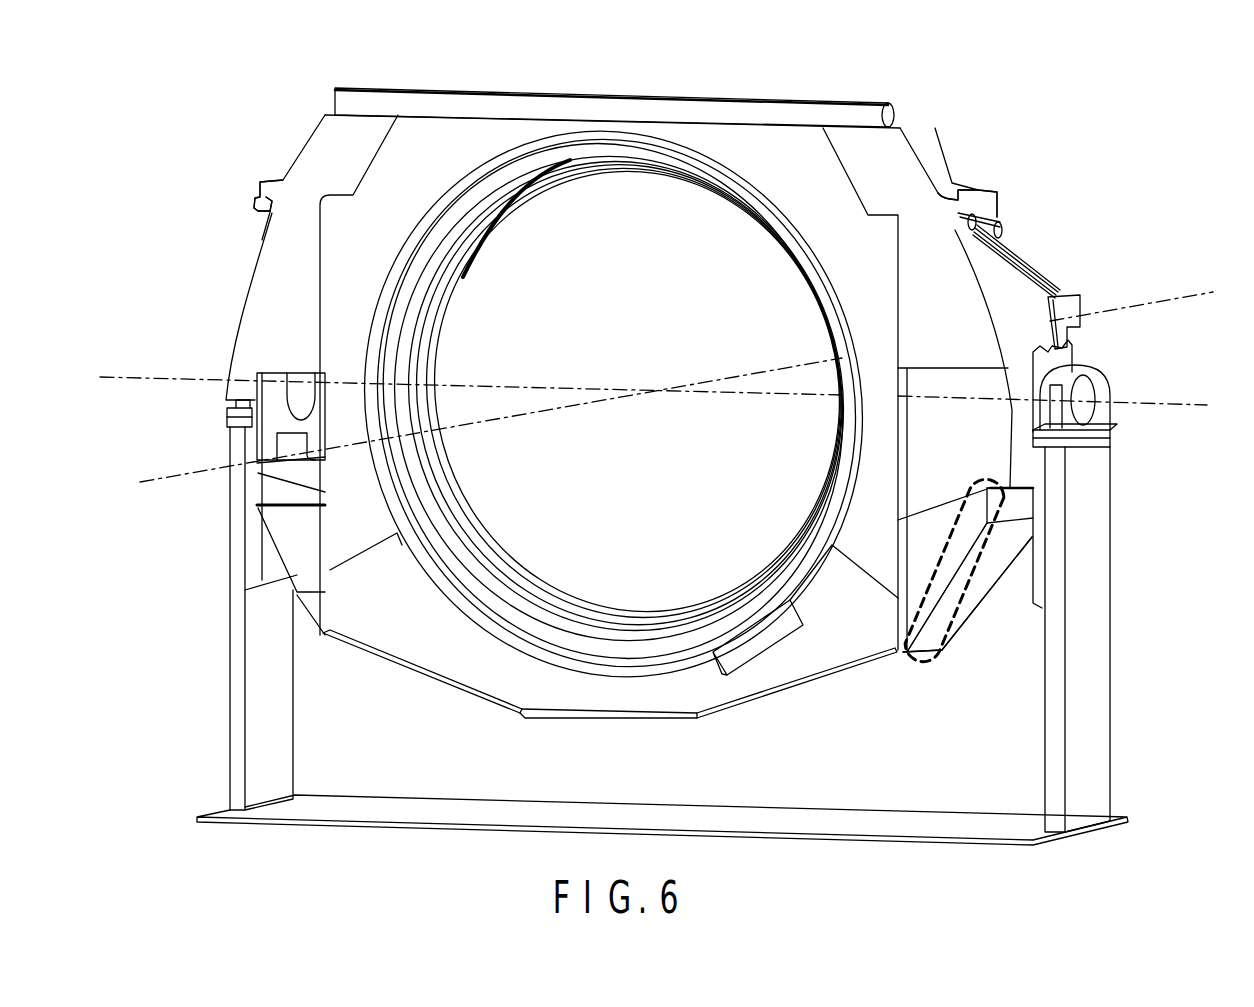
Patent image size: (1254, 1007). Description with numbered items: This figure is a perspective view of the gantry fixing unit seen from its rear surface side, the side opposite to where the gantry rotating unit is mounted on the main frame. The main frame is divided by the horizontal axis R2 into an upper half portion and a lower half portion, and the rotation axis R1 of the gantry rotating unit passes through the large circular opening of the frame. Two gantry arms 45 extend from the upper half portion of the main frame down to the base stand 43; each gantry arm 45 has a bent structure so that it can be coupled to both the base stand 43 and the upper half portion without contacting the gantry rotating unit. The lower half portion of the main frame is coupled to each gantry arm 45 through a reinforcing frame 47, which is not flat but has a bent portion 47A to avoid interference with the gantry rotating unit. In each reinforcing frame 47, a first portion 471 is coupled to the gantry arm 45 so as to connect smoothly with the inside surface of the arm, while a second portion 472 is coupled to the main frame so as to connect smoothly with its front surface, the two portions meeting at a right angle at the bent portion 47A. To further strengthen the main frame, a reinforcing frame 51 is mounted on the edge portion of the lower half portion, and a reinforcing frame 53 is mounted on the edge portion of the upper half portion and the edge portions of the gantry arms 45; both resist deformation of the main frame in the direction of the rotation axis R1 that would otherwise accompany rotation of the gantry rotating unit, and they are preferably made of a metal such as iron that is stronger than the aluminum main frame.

The reinforcing frame 53 is at (597, 105).
The gantry arm 45 is at (303, 172).
The base stand 43 is at (265, 683).
The reinforcing frame 47 is at (300, 545).
The first portion 471 is at (1013, 550).
The second portion 472 is at (922, 558).
The bent portion 47A is at (967, 600).
The reinforcing frame 51 is at (610, 718).
The rotation axis R1 is at (1160, 295).
The horizontal axis R2 is at (1165, 400).